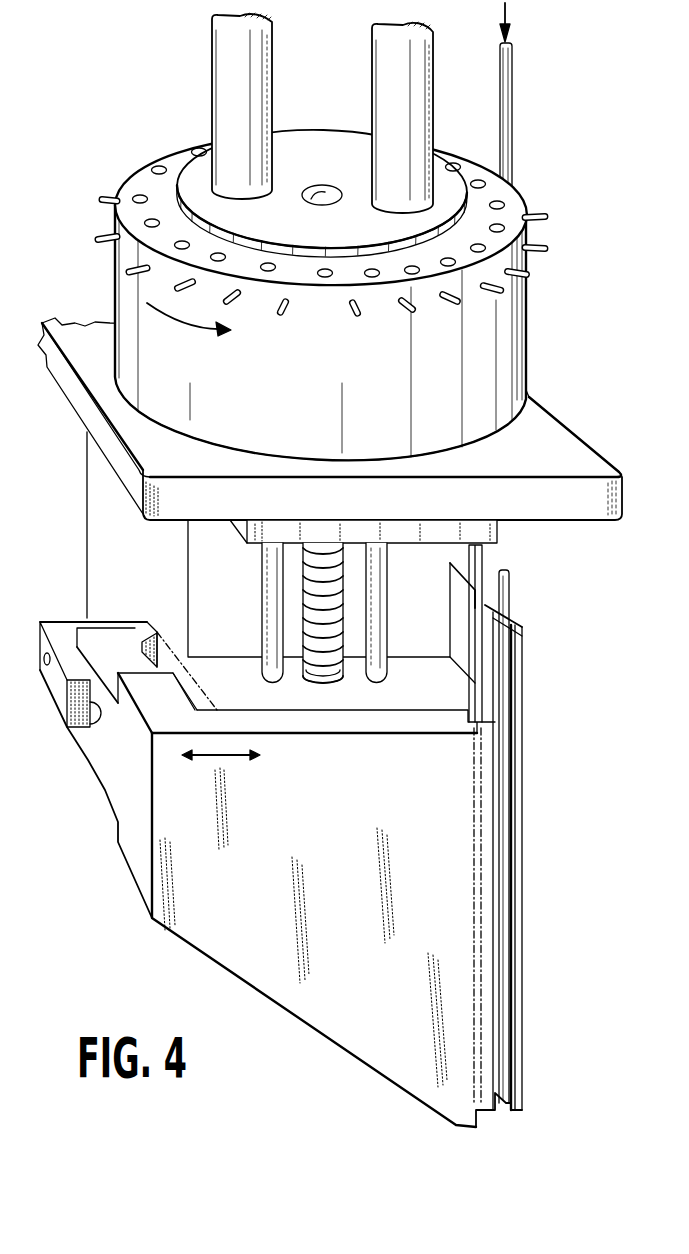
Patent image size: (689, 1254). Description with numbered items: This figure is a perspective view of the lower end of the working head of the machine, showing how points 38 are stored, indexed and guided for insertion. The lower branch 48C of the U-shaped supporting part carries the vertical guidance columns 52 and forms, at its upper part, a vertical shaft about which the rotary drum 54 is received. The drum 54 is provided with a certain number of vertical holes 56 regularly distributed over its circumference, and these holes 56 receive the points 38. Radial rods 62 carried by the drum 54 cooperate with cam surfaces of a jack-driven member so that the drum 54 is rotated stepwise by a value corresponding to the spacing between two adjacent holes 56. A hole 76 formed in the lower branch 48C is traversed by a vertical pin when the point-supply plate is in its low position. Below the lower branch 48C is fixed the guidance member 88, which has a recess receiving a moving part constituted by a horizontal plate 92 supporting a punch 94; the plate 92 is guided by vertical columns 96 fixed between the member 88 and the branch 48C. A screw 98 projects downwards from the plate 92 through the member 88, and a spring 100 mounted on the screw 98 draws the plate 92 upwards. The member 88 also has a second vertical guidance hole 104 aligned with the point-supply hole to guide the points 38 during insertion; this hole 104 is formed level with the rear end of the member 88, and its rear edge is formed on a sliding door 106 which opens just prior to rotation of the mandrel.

The points 38 is at (506, 97).
The lower branch 48C is at (541, 452).
The vertical guidance columns 52 is at (402, 58).
The rotary drum 54 is at (504, 335).
The holes 56 is at (370, 276).
The radial rods 62 is at (105, 237).
The hole 76 is at (302, 198).
The guidance member 88 is at (442, 697).
The horizontal plate 92 is at (243, 530).
The punch 94 is at (484, 560).
The vertical columns 96 is at (275, 588).
The screw 98 is at (323, 627).
The spring 100 is at (298, 665).
The second vertical guidance hole 104 is at (501, 648).
The sliding door 106 is at (203, 923).